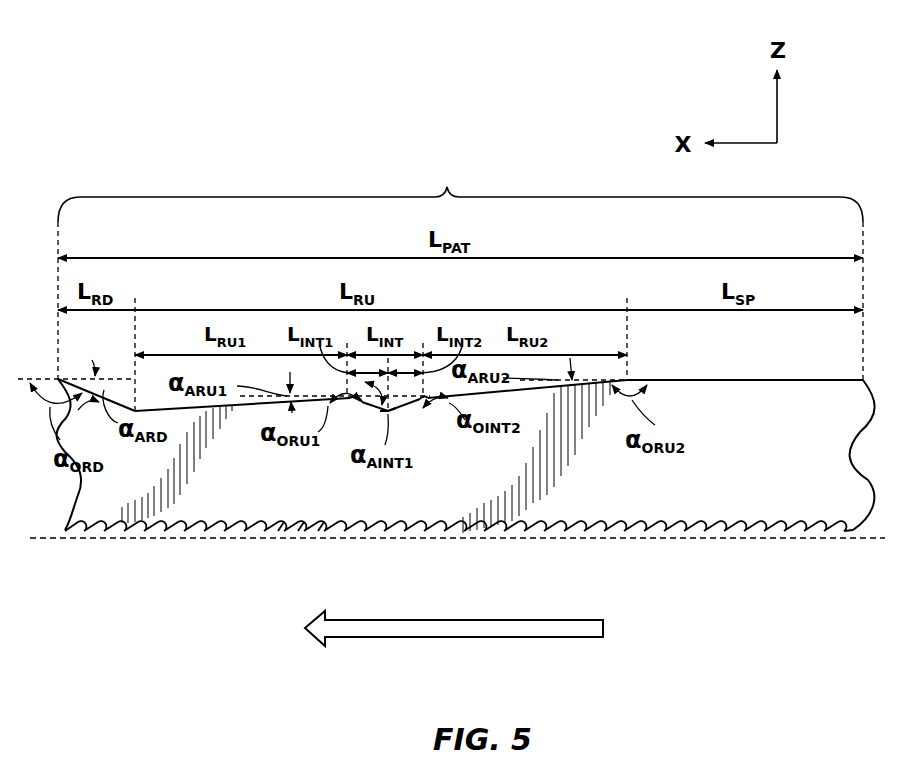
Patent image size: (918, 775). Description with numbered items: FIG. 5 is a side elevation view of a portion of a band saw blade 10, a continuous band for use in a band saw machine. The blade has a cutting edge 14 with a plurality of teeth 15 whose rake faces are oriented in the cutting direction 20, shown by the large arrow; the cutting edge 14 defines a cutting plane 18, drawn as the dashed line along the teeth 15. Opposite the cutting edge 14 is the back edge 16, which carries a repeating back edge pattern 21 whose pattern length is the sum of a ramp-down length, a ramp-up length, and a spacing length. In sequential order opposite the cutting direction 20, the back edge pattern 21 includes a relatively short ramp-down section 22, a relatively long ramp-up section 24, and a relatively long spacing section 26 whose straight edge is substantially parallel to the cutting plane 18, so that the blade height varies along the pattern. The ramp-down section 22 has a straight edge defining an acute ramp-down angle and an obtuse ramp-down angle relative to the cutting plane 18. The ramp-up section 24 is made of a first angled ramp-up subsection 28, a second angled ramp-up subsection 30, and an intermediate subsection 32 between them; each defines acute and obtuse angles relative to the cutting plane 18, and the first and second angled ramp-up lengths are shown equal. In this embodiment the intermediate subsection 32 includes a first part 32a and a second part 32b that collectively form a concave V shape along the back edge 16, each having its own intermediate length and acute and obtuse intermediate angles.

The band saw blade 10 is at (800, 452).
The cutting edge 14 is at (240, 540).
The teeth 15 is at (281, 538).
The back edge 16 is at (790, 380).
The cutting plane 18 is at (717, 540).
The cutting direction 20 is at (493, 637).
The back edge pattern 21 is at (460, 190).
The ramp-down section 22 is at (103, 434).
The ramp-up section 24 is at (388, 480).
The spacing section 26 is at (733, 412).
The first angled ramp-up subsection 28 is at (246, 414).
The second angled ramp-up subsection 30 is at (532, 400).
The intermediate subsection 32 is at (405, 418).
The first part 32a is at (361, 403).
The second part 32b is at (414, 403).